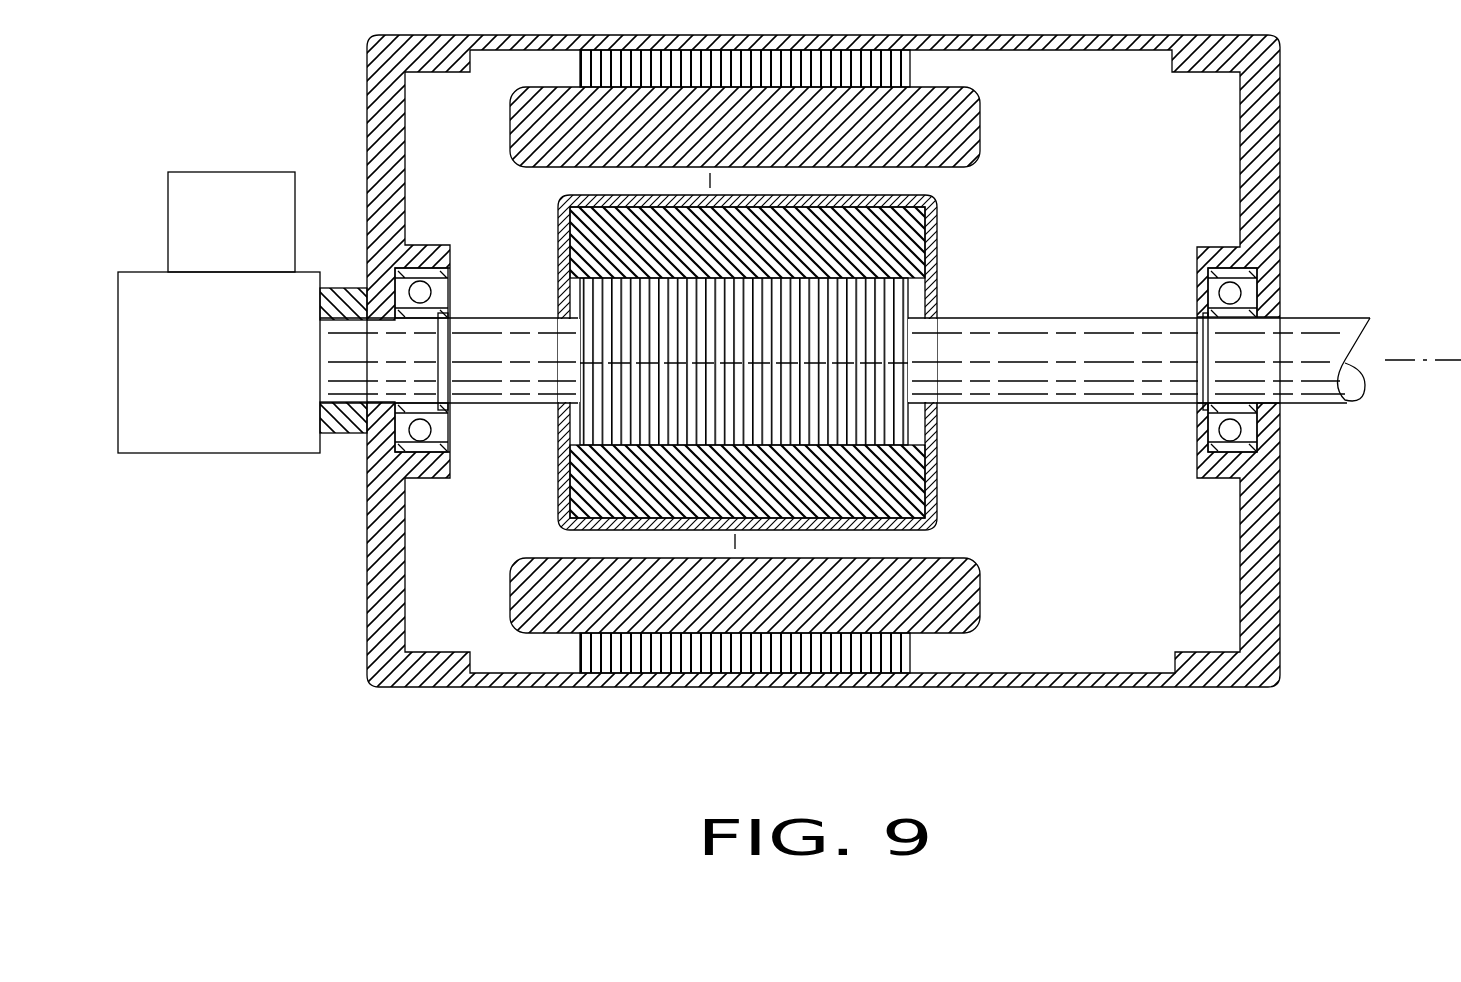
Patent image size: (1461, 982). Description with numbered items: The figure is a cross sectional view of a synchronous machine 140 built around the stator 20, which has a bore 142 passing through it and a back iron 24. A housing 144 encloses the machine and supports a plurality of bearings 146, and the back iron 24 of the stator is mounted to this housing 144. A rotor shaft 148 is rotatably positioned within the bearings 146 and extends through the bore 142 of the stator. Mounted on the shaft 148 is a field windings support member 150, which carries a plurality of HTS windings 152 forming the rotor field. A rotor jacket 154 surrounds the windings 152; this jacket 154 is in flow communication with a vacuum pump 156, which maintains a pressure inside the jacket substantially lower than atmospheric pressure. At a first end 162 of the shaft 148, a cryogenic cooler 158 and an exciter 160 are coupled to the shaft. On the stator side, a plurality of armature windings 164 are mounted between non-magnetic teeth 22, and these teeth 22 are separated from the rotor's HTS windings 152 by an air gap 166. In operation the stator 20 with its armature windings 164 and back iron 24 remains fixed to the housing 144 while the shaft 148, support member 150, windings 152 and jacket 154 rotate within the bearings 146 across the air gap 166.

The stator 20 is at (1000, 607).
The non-magnetic teeth 22 is at (745, 360).
The back iron 24 is at (580, 657).
The synchronous machine 140 is at (890, 386).
The bore 142 is at (785, 361).
The housing 144 is at (1223, 690).
The bearings 146 is at (450, 450).
The rotor shaft 148 is at (1123, 405).
The field windings support member 150 is at (915, 305).
The HTS windings 152 is at (913, 485).
The rotor jacket 154 is at (935, 240).
The vacuum pump 156 is at (248, 238).
The cryogenic cooler 158 is at (250, 378).
The exciter 160 is at (324, 393).
The first end 162 is at (242, 364).
The armature windings 164 is at (877, 613).
The air gap 166 is at (710, 178).